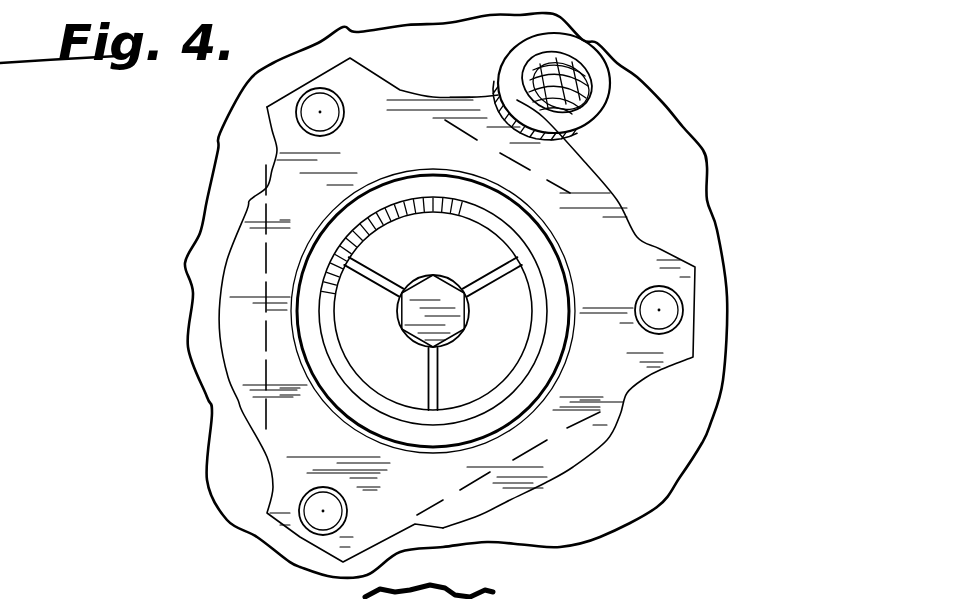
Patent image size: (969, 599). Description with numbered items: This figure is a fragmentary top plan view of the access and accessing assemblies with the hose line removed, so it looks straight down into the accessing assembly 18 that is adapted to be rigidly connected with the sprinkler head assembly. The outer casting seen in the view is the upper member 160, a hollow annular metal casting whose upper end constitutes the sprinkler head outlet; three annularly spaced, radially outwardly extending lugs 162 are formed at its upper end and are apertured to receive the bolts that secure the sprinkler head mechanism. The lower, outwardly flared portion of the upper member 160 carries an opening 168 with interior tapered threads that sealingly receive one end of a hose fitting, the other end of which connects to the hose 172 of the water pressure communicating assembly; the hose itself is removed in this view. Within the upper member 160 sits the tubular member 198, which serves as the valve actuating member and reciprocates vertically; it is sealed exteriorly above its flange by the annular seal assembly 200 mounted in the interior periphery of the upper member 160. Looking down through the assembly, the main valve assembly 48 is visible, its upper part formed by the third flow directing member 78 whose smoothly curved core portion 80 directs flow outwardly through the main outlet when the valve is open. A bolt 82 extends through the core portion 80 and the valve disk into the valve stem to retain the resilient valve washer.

The accessing assembly 18 is at (708, 151).
The main valve assembly 48 is at (538, 293).
The third flow directing member 78 is at (525, 355).
The core portion 80 is at (382, 373).
The bolt 82 is at (440, 297).
The upper member 160 is at (214, 397).
The lugs 162 is at (283, 107).
The opening 168 is at (583, 83).
The hose 172 is at (493, 593).
The tubular member 198 is at (432, 418).
The annular seal assembly 200 is at (423, 184).